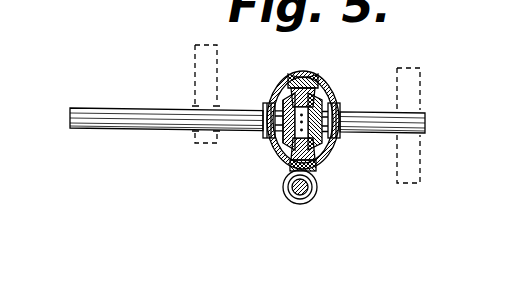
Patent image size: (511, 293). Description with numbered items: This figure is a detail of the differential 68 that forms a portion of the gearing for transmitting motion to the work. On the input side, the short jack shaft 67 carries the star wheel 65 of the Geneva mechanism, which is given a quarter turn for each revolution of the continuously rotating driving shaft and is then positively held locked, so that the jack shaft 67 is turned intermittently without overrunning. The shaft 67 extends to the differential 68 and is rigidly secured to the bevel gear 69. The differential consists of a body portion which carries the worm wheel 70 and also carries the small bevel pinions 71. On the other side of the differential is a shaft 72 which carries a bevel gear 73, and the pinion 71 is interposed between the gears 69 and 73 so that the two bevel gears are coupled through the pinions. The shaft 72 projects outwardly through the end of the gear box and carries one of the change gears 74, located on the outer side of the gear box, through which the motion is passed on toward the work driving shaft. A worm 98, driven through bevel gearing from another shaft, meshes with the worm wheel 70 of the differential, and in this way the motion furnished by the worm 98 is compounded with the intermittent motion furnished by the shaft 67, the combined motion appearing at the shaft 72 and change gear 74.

The star wheel 65 is at (205, 44).
The jack shaft 67 is at (118, 110).
The differential 68 is at (325, 84).
The bevel gear 69 is at (264, 118).
The worm wheel 70 is at (302, 64).
The bevel pinion 71 is at (283, 96).
The shaft 72 is at (380, 132).
The bevel gear 73 is at (337, 98).
The change gear 74 is at (409, 66).
The worm 98 is at (318, 190).